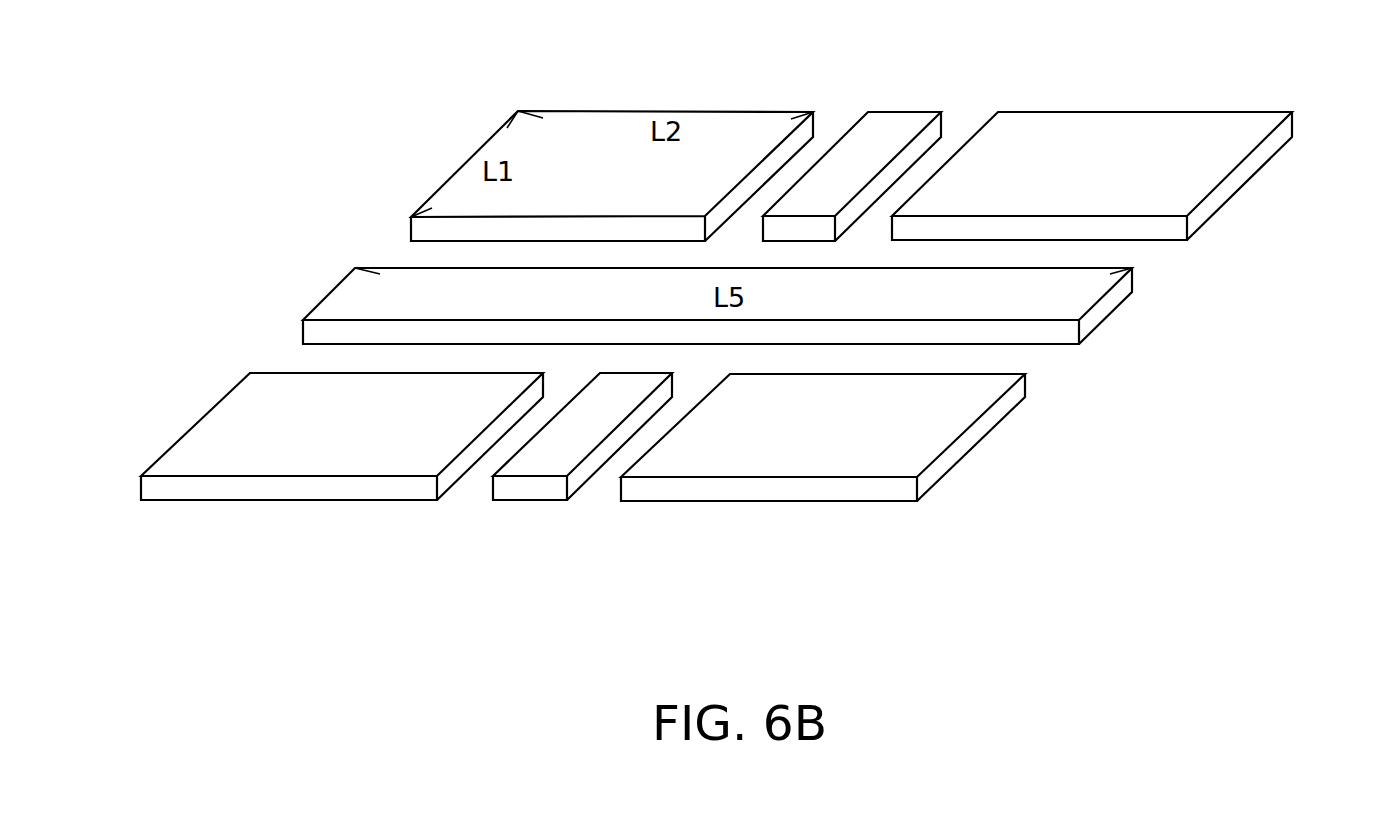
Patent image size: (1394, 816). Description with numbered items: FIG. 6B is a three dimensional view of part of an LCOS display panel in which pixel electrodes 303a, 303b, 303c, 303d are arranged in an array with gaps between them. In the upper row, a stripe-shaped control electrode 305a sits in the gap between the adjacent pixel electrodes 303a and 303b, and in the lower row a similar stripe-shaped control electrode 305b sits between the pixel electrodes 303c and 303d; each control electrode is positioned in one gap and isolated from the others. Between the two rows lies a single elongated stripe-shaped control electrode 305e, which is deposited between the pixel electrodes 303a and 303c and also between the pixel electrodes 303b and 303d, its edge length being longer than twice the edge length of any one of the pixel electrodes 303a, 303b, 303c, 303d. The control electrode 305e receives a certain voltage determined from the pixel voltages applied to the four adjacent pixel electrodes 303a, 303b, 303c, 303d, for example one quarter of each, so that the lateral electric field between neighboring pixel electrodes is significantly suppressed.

The pixel electrode 303a is at (605, 125).
The pixel electrode 303b is at (1227, 157).
The pixel electrode 303c is at (210, 422).
The pixel electrode 303d is at (955, 419).
The control electrode 305a is at (892, 122).
The control electrode 305b is at (538, 462).
The control electrode 305e is at (1083, 297).